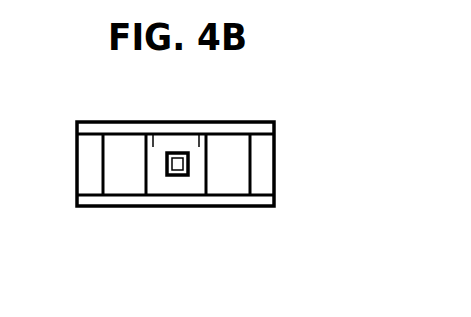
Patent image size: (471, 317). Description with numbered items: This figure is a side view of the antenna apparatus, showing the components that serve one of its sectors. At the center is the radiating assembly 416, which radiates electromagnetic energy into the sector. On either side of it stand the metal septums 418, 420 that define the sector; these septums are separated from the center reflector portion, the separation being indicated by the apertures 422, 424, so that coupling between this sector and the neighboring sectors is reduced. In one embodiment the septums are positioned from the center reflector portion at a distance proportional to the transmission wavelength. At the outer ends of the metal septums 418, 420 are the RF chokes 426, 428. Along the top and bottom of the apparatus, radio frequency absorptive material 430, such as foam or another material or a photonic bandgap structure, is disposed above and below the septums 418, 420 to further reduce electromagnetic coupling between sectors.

The radiating assembly 416 is at (177, 165).
The metal septum 418 is at (128, 182).
The metal septum 420 is at (228, 182).
The aperture 422 is at (153, 147).
The aperture 424 is at (203, 147).
The RF choke 426 is at (84, 163).
The RF choke 428 is at (267, 163).
The radio frequency absorptive material 430 is at (265, 123).